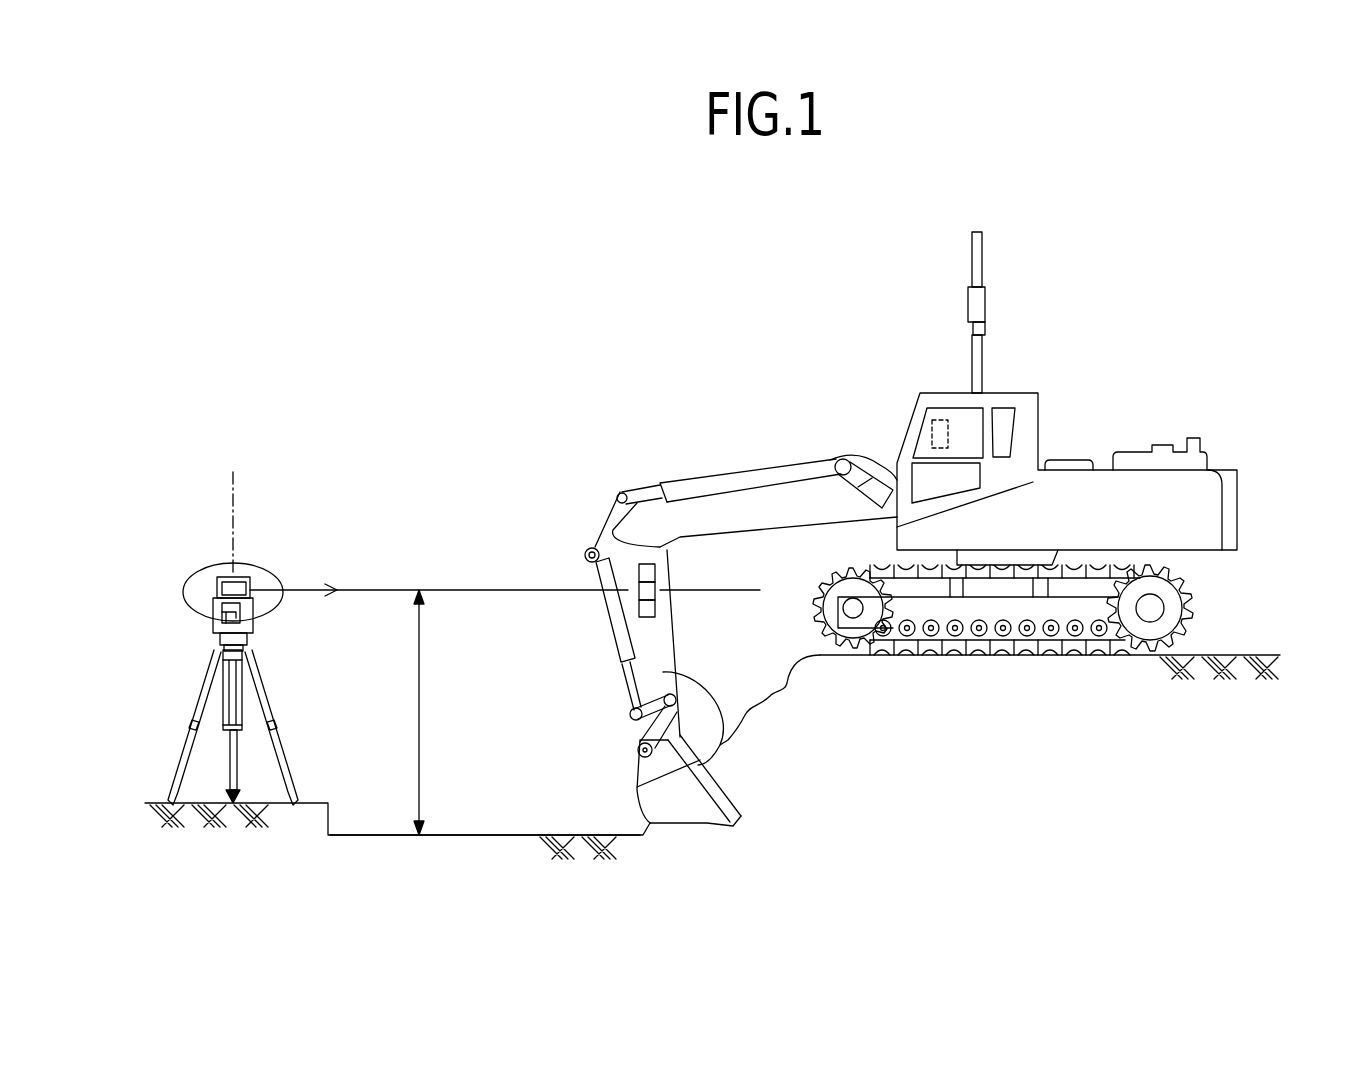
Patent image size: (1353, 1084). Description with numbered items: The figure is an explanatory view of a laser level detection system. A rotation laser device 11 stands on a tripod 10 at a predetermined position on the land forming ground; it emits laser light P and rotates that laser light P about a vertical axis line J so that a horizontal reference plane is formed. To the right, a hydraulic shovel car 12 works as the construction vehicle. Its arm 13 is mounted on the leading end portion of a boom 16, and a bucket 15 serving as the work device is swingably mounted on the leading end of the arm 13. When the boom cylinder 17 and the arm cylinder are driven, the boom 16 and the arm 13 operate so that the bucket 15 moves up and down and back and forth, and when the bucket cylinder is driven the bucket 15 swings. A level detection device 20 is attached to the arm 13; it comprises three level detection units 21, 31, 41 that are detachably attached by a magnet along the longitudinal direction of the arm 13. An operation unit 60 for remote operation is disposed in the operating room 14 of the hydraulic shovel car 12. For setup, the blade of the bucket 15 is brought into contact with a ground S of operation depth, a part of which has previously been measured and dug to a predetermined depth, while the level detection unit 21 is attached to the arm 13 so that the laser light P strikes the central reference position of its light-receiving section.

The tripod 10 is at (196, 712).
The rotation laser device 11 is at (213, 606).
The hydraulic shovel car 12 is at (1063, 358).
The arm 13 is at (733, 735).
The operating room 14 is at (965, 425).
The bucket 15 is at (684, 812).
The boom 16 is at (724, 500).
The boom cylinder 17 is at (880, 490).
The level detection device 20 is at (634, 568).
The level detection unit 21 is at (655, 569).
The level detection unit 31 is at (655, 598).
The level detection unit 41 is at (655, 612).
The operation unit 60 is at (936, 415).
The vertical axis line J is at (233, 533).
The laser light P is at (303, 592).
The ground of operation depth S is at (390, 833).